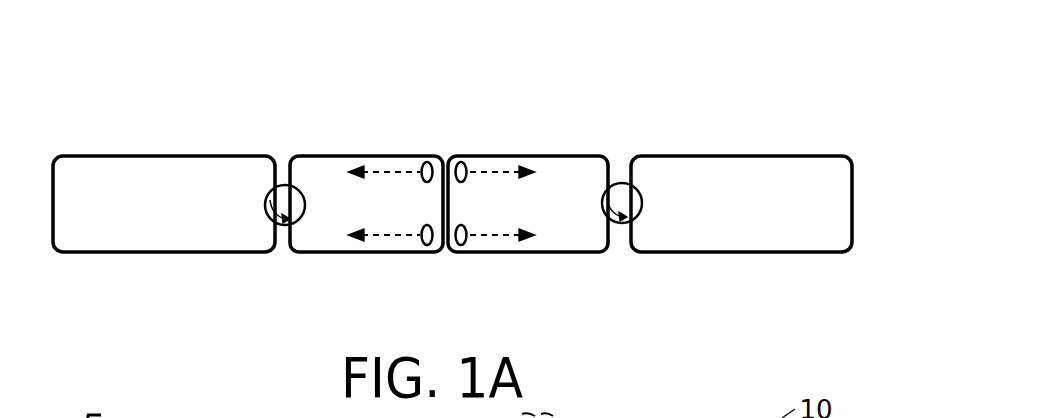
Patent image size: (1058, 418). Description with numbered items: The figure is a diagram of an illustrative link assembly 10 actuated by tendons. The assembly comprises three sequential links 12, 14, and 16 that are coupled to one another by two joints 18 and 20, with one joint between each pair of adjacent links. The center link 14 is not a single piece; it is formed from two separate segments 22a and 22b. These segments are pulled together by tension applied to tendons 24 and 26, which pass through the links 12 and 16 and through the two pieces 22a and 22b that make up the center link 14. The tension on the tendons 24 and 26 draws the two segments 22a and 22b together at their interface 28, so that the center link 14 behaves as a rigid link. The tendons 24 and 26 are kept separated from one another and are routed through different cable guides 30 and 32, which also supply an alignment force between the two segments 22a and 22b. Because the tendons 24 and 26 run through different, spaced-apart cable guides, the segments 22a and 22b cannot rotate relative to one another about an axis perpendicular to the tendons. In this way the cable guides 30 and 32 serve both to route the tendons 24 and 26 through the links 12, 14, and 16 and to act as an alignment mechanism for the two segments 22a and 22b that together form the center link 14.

The link assembly 10 is at (188, 292).
The link 12 is at (127, 193).
The center link 14 is at (322, 217).
The link 16 is at (722, 188).
The joint 18 is at (623, 225).
The joint 20 is at (280, 226).
The segment 22a is at (343, 155).
The segment 22b is at (557, 155).
The tendon 24 is at (492, 177).
The tendon 26 is at (498, 240).
The interface 28 is at (446, 160).
The cable guide 30 is at (467, 165).
The cable guide 32 is at (423, 165).